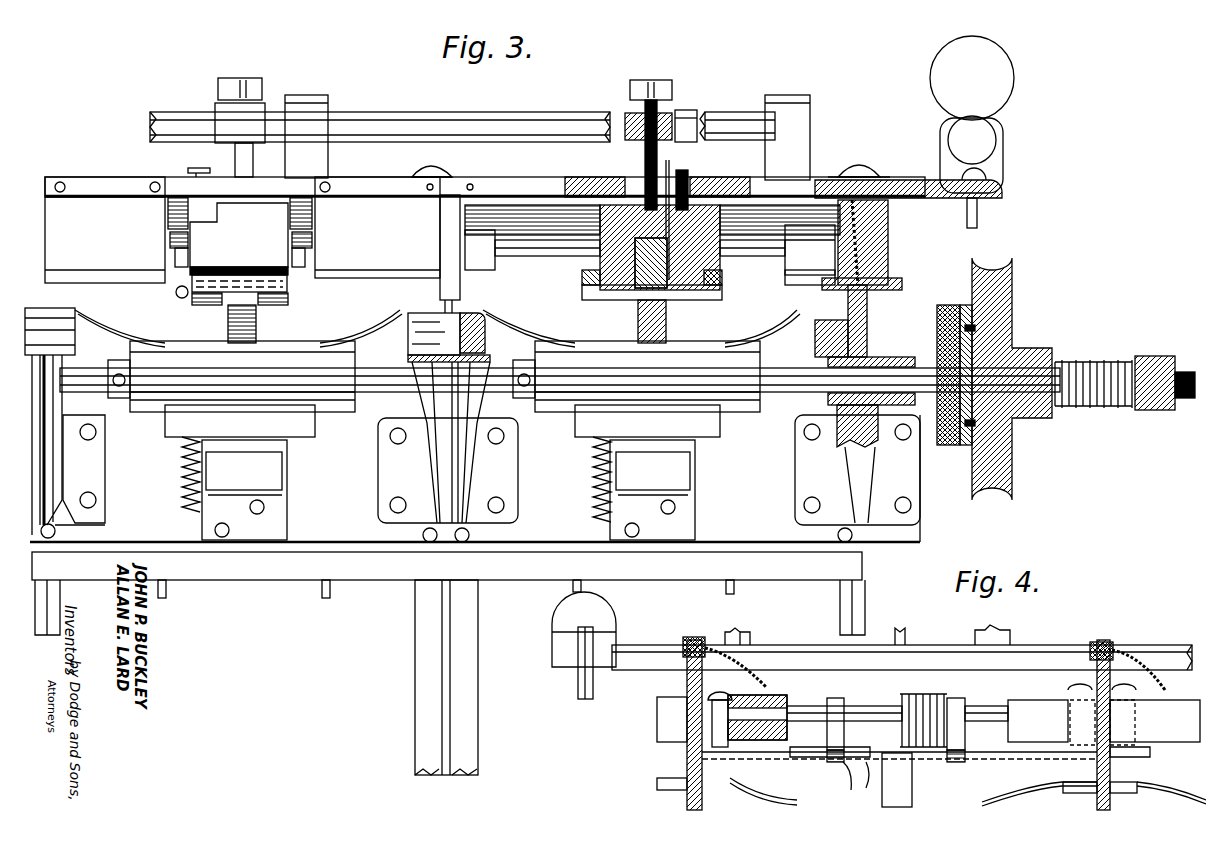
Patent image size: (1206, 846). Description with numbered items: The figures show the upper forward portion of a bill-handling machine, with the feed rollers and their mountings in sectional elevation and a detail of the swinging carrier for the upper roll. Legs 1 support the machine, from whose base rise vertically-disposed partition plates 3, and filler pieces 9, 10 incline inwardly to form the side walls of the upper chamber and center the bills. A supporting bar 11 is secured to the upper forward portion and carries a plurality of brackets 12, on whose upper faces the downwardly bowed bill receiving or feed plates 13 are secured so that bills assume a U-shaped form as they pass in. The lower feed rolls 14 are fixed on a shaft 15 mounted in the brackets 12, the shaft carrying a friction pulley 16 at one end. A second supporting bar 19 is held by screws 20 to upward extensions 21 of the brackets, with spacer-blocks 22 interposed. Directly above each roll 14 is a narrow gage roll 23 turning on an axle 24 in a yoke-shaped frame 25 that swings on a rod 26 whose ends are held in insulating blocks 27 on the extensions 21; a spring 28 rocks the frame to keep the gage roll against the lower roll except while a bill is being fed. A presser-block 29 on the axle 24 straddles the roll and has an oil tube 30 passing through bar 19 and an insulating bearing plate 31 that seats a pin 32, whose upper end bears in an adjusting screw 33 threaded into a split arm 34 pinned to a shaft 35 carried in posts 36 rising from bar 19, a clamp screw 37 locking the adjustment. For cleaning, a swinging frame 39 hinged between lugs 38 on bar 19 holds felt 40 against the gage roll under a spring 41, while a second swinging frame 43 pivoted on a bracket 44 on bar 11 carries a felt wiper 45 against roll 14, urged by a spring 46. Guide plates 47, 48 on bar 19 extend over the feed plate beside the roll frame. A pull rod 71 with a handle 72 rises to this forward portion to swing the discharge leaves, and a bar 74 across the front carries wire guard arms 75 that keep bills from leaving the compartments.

In FIG. 4, the legs 1 is at (1062, 678).
In FIG. 4, the partition plates 3 is at (687, 675).
In FIG. 3, the filler piece 9 is at (415, 626).
In FIG. 3, the filler piece 10 is at (60, 612).
In FIG. 3, the supporting bar 11 is at (150, 532).
In FIG. 3, the brackets 12 is at (488, 462).
In FIG. 3, the bill receiving or feed plates 13 is at (535, 335).
In FIG. 4, the bill receiving or feed plates 13 is at (752, 788).
In FIG. 3, the lower feed roll 14 is at (445, 376).
In FIG. 3, the shaft 15 is at (378, 368).
In FIG. 3, the friction pulley 16 is at (1010, 328).
In FIG. 3, the second supporting bar 19 is at (580, 177).
In FIG. 4, the second supporting bar 19 is at (1035, 652).
In FIG. 3, the screws 20 is at (425, 170).
In FIG. 3, the upward extensions 21 is at (38, 298).
In FIG. 4, the upward extensions 21 is at (680, 742).
In FIG. 3, the spacer-blocks 22 is at (440, 240).
In FIG. 3, the gage roll 23 is at (256, 322).
In FIG. 4, the gage roll 23 is at (912, 786).
In FIG. 3, the axle 24 is at (582, 290).
In FIG. 3, the yoke-shaped frame 25 is at (178, 284).
In FIG. 4, the yoke-shaped frame 25 is at (845, 770).
In FIG. 3, the rod or bar 26 is at (527, 266).
In FIG. 4, the rod or bar 26 is at (820, 706).
In FIG. 3, the blocks 27 is at (812, 286).
In FIG. 4, the blocks 27 is at (775, 710).
In FIG. 4, the spring 28 is at (920, 694).
In FIG. 3, the presser-block 29 is at (600, 218).
In FIG. 4, the presser-block 29 is at (867, 786).
In FIG. 3, the oil tube 30 is at (690, 178).
In FIG. 3, the insulating bearing plate 31 is at (678, 213).
In FIG. 3, the pin or bar 32 is at (645, 165).
In FIG. 4, the pin or bar 32 is at (906, 632).
In FIG. 3, the adjusting screw 33 is at (262, 88).
In FIG. 3, the split arm or lever 34 is at (630, 113).
In FIG. 3, the shaft 35 is at (470, 117).
In FIG. 3, the posts 36 is at (810, 118).
In FIG. 4, the posts 36 is at (740, 630).
In FIG. 3, the clamp screw 37 is at (685, 112).
In FIG. 3, the lugs 38 is at (168, 200).
In FIG. 3, the swinging frame 39 is at (239, 235).
In FIG. 3, the felt 40 is at (290, 282).
In FIG. 3, the spring 41 is at (196, 168).
In FIG. 3, the swinging frame 43 is at (287, 480).
In FIG. 3, the bracket 44 is at (232, 492).
In FIG. 3, the felt wiper 45 is at (235, 405).
In FIG. 3, the spring 46 is at (182, 458).
In FIG. 3, the guide plate 47 is at (105, 230).
In FIG. 4, the guide plate 47 is at (1015, 759).
In FIG. 3, the guide plate 48 is at (377, 227).
In FIG. 4, the guide plate 48 is at (818, 757).
In FIG. 3, the pull rod 71 is at (967, 214).
In FIG. 3, the handle 72 is at (1014, 68).
In FIG. 3, the bar 74 is at (270, 567).
In FIG. 3, the wire guard arms 75 is at (166, 590).